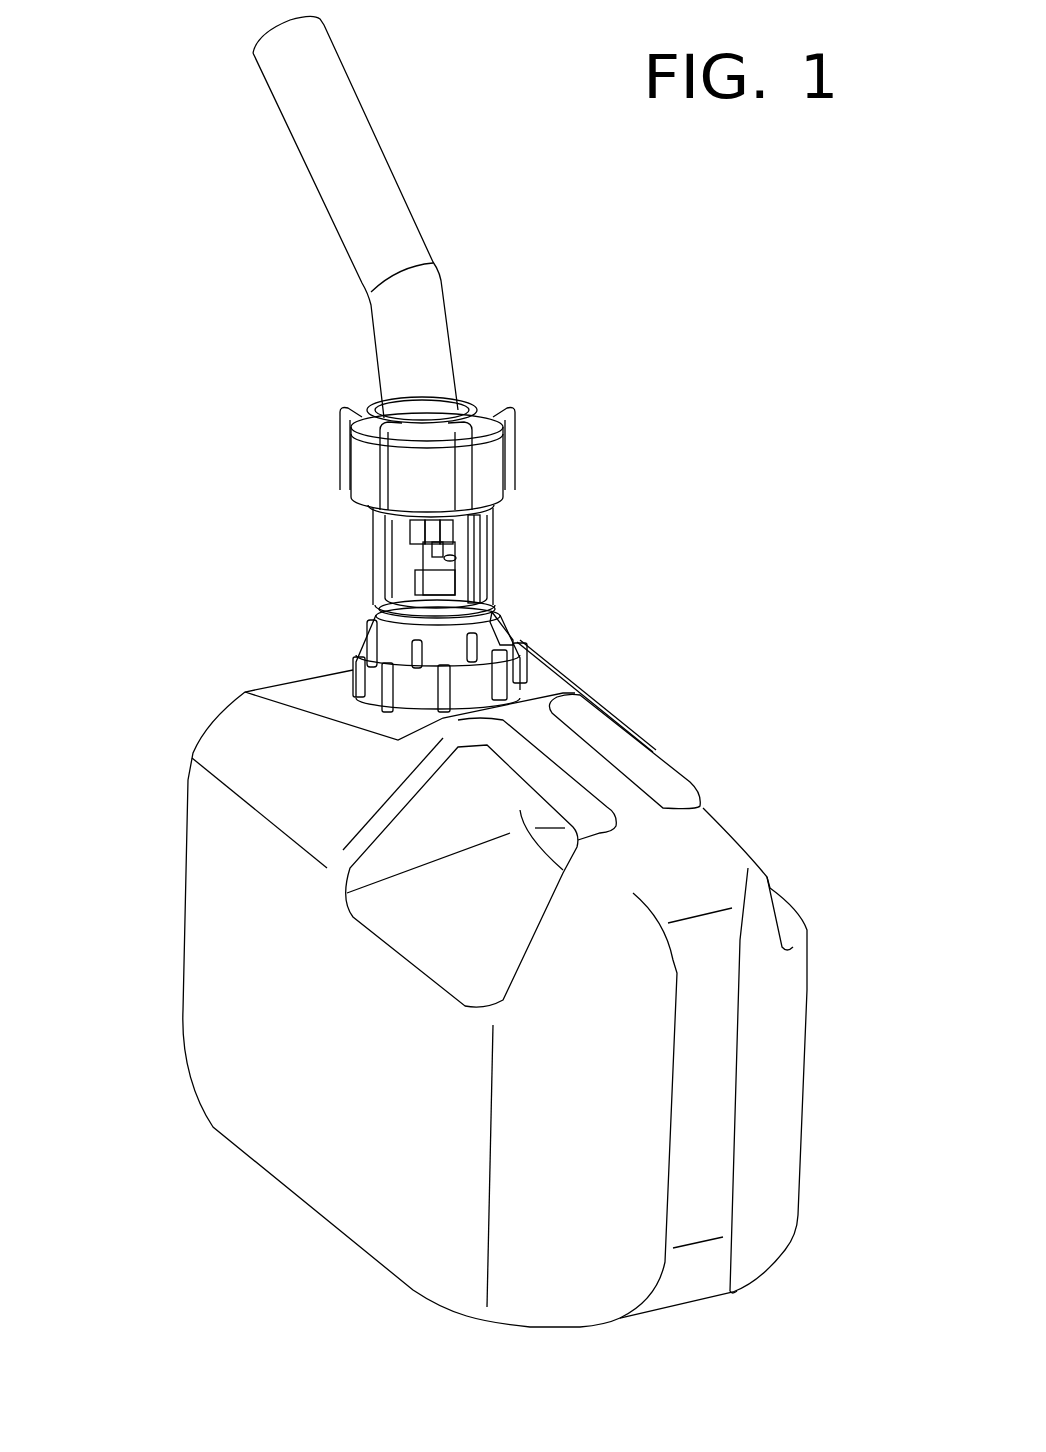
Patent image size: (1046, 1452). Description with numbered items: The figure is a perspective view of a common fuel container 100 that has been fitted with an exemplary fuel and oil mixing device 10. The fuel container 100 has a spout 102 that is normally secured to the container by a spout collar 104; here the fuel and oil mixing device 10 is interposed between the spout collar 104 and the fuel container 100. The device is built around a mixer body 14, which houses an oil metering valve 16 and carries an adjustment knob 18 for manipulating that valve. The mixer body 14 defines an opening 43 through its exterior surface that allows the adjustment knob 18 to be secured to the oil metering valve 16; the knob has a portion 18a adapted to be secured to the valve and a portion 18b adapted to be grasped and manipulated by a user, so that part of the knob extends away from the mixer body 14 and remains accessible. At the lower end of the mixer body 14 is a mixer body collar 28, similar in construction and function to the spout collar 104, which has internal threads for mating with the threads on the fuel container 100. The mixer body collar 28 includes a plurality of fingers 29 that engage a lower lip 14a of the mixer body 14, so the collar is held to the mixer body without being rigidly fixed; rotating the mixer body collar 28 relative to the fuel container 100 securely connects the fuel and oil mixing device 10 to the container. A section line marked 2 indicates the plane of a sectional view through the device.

The fuel and oil mixing device 10 is at (485, 538).
The mixer body 14 is at (382, 587).
The lower lip 14a is at (366, 653).
The oil metering valve 16 is at (433, 552).
The adjustment knob 18 is at (402, 571).
The portion 18a is at (452, 548).
The portion 18b is at (455, 577).
The mixer body collar 28 is at (483, 675).
The fingers 29 is at (443, 637).
The opening 43 is at (390, 578).
The fuel container 100 is at (703, 847).
The spout 102 is at (350, 125).
The spout collar 104 is at (487, 452).
The section line 2- 2 is at (270, 683).